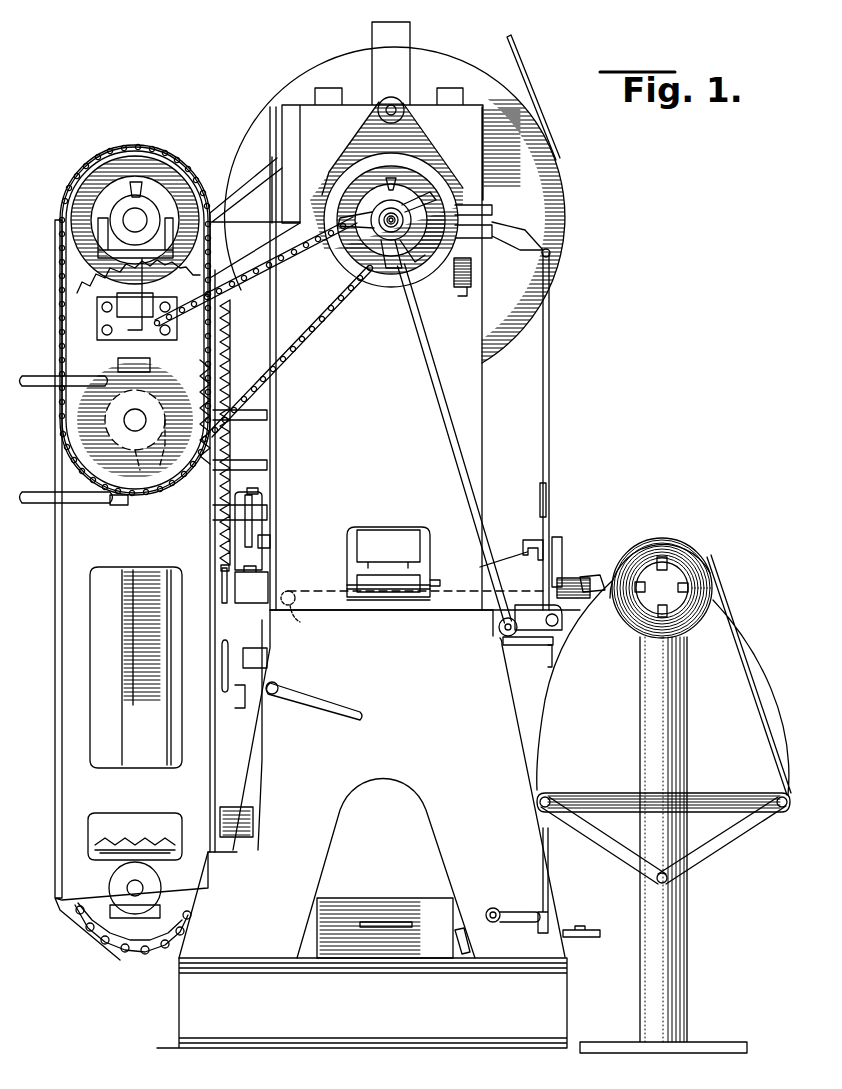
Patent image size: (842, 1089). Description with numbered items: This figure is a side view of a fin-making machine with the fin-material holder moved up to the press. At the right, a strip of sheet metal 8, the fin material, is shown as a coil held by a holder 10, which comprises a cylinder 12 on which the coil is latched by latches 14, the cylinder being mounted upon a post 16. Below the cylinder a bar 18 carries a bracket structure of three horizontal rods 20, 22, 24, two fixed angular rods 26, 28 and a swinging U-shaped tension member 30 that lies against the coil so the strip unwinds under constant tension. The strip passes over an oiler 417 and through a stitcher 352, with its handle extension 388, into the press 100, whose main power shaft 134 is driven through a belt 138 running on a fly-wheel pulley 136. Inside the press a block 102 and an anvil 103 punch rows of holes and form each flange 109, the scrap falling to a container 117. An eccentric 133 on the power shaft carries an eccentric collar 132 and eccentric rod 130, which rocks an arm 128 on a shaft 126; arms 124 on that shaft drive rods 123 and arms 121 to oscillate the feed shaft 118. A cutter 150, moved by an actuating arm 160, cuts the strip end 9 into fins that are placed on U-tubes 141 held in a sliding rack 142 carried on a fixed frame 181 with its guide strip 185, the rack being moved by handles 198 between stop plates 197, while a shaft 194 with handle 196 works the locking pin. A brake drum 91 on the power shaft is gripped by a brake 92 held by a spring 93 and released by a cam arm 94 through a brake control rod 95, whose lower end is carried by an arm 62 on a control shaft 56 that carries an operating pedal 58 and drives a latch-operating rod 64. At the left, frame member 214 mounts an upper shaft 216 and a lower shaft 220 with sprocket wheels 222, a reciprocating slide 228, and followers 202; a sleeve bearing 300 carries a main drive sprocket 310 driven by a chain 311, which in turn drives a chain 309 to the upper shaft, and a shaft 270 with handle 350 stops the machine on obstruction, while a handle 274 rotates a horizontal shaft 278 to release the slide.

The strip of sheet metal 8 is at (685, 640).
The strip end 9 is at (218, 567).
The holder 10 is at (747, 614).
The cylinder 12 is at (680, 560).
The latches 14 is at (640, 590).
The post 16 is at (650, 715).
The bar 18 is at (615, 792).
The horizontal rod 20 is at (548, 795).
The horizontal rod 22 is at (657, 880).
The horizontal rod 24 is at (781, 812).
The fixed angular rod 26 is at (600, 833).
The fixed angular rod 28 is at (715, 850).
The swinging U-shaped brake or tension member 30 is at (745, 702).
The control shaft 56 is at (490, 908).
The operating pedal 58 is at (583, 926).
The arm 62 is at (512, 910).
The latch-operating rod 64 is at (460, 954).
The brake drum 91 is at (420, 195).
The brake 92 is at (420, 145).
The spring 93 is at (474, 280).
The cam arm 94 is at (495, 232).
The brake control rod 95 is at (540, 845).
The press 100 is at (575, 303).
The block 102 is at (355, 548).
The anvil 103 is at (350, 580).
The flange 109 is at (355, 562).
The container 117 is at (345, 942).
The shaft 118 is at (308, 620).
The arms 121 is at (292, 588).
The rods 123 is at (385, 605).
The arms 124 is at (552, 612).
The shaft 126 is at (552, 630).
The arm 128 is at (522, 645).
The eccentric rod 130 is at (440, 415).
The eccentric collar 132 is at (425, 268).
The eccentric 133 is at (375, 210).
The main power shaft 134 is at (392, 215).
The fly-wheel pulley 136 is at (555, 180).
The belt 138 is at (520, 65).
The U-tubes 141 is at (222, 593).
The sliding rack 142 is at (209, 779).
The cutter 150 is at (226, 524).
The actuating arm 160 is at (270, 540).
The fixed frame 181 is at (262, 655).
The guide strip 185 is at (245, 700).
The shaft 194 is at (275, 683).
The handle 196 is at (320, 700).
The stop plates 197 is at (240, 815).
The handles 198 is at (222, 660).
The followers 202 is at (235, 340).
The frame member 214 is at (60, 595).
The shaft 216 is at (137, 218).
The shaft 220 is at (127, 887).
The sprocket wheels 222 is at (112, 835).
The reciprocating slide 228 is at (141, 574).
The shaft 270 is at (112, 366).
The handle 274 is at (52, 500).
The horizontal shaft 278 is at (110, 505).
The sleeve bearing 300 is at (165, 410).
The chain 309 is at (80, 295).
The main drive sprocket 310 is at (62, 455).
The chain 311 is at (310, 335).
The handle 350 is at (50, 375).
The stitcher 352 is at (530, 532).
The handle extension 388 is at (538, 488).
The oiler 417 is at (610, 600).